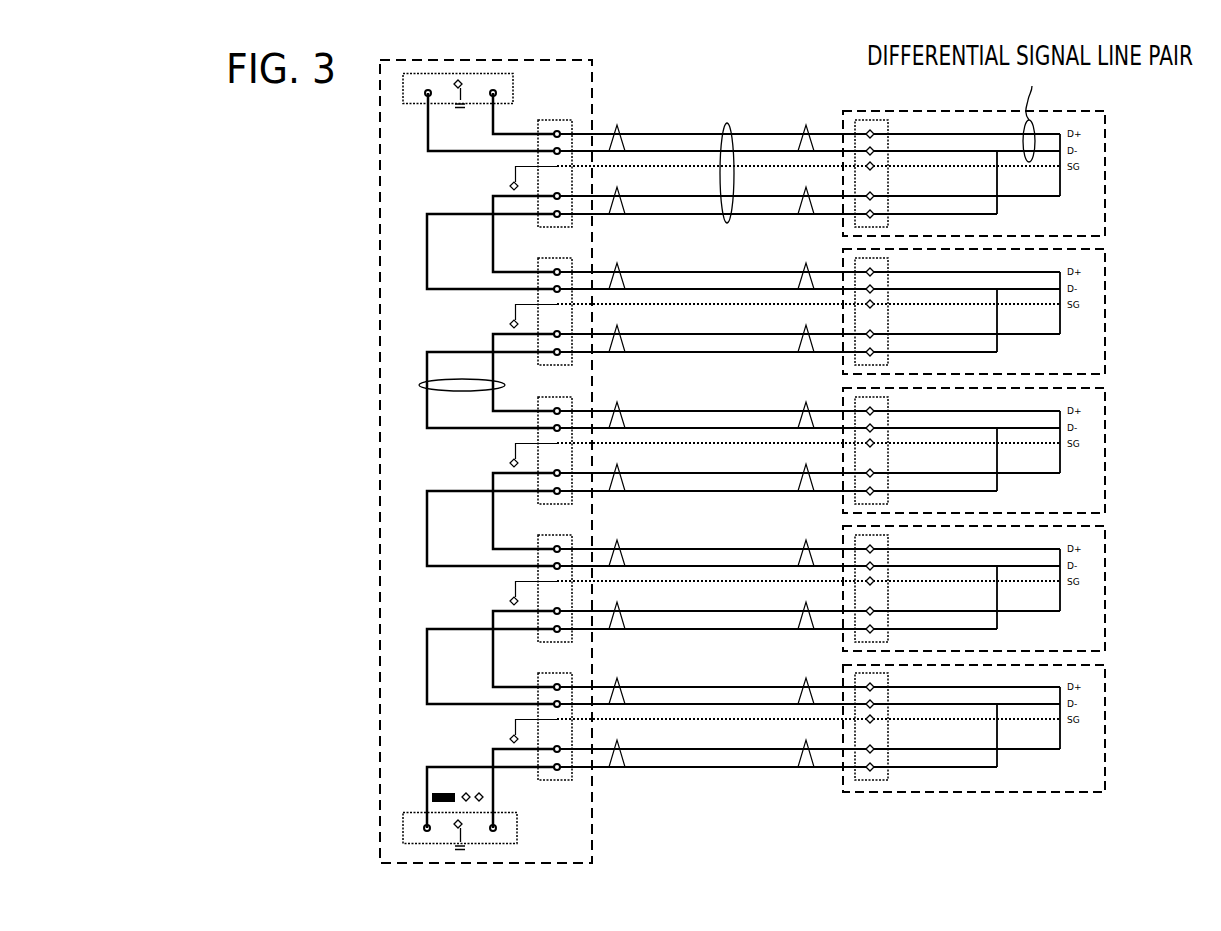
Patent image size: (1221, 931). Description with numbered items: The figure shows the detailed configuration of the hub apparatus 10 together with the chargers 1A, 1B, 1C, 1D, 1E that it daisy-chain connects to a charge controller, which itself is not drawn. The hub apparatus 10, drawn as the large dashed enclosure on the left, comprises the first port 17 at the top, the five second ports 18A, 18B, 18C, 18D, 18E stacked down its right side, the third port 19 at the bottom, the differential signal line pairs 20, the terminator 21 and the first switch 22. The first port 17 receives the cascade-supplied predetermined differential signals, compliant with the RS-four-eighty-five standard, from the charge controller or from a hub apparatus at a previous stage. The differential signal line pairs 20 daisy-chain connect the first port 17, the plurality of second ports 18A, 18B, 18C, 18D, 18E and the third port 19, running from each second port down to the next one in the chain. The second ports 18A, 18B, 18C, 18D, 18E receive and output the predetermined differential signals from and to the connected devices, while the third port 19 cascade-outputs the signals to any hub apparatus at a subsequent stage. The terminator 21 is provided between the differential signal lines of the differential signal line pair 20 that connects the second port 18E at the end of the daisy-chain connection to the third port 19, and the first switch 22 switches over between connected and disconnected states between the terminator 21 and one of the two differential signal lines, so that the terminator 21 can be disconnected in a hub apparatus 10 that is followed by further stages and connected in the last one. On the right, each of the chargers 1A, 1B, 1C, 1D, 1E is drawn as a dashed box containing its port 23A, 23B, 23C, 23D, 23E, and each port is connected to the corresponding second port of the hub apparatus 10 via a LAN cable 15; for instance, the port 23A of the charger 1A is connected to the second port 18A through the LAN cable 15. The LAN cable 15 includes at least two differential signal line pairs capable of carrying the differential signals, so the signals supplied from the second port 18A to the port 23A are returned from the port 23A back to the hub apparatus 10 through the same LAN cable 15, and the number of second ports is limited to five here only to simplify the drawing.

The hub apparatus 10 is at (592, 846).
The LAN cable 15 is at (727, 124).
The first port 17 is at (513, 90).
The second port 18A is at (572, 120).
The second port 18B is at (572, 258).
The second port 18C is at (572, 397).
The second port 18D is at (572, 535).
The second port 18E is at (572, 673).
The third port 19 is at (517, 830).
The differential signal line pairs 20 is at (419, 386).
The terminator 21 is at (442, 788).
The first switch 22 is at (472, 788).
The port 23A is at (855, 121).
The port 23B is at (855, 259).
The port 23C is at (855, 398).
The port 23D is at (855, 536).
The port 23E is at (855, 674).
The charger 1A is at (1105, 176).
The charger 1B is at (1105, 312).
The charger 1C is at (1105, 451).
The charger 1D is at (1105, 587).
The charger 1E is at (1105, 722).